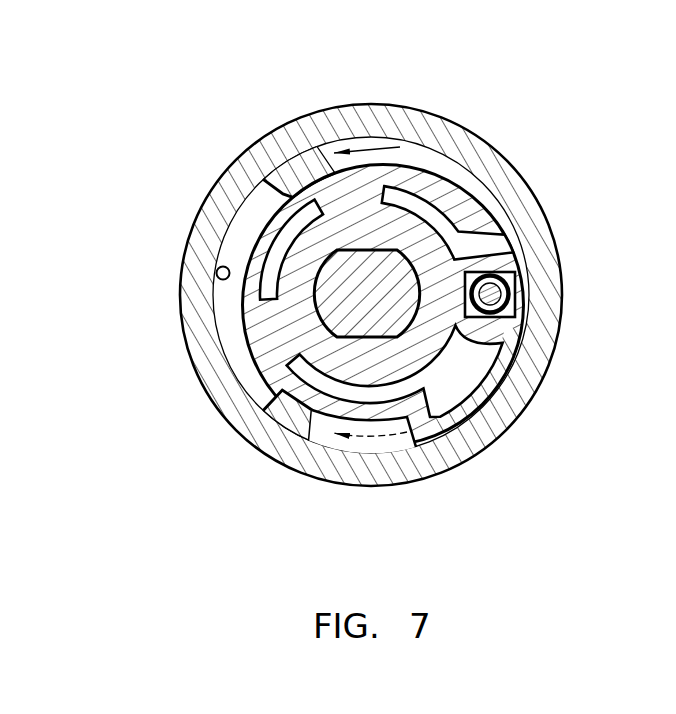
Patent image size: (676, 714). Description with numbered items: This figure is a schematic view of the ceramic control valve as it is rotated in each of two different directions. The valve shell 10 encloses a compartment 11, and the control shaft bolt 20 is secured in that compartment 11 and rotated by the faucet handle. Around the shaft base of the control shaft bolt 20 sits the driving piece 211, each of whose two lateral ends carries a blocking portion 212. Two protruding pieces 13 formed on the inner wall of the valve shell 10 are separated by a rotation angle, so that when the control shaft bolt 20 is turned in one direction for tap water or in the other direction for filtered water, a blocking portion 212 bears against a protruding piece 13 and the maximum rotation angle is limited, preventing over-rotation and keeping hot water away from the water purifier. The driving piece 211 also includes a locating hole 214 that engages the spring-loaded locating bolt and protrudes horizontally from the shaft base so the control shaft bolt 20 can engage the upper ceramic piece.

The valve shell 10 is at (437, 106).
The compartment 11 is at (232, 345).
The protruding pieces 13 is at (289, 172).
The control shaft bolt 20 is at (322, 273).
The driving piece 211 is at (527, 365).
The blocking portion 212 is at (505, 228).
The locating hole 214 is at (518, 294).